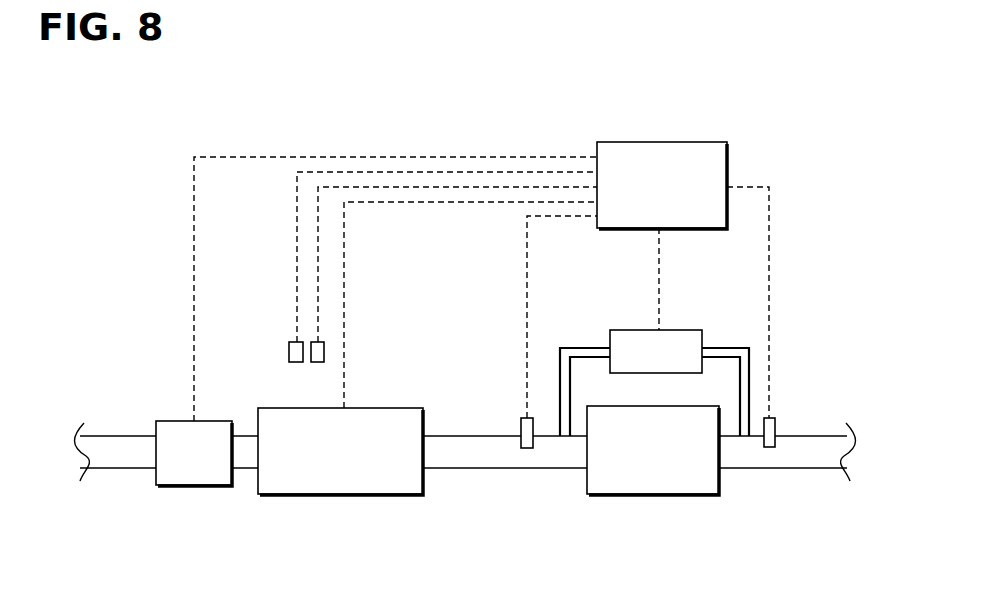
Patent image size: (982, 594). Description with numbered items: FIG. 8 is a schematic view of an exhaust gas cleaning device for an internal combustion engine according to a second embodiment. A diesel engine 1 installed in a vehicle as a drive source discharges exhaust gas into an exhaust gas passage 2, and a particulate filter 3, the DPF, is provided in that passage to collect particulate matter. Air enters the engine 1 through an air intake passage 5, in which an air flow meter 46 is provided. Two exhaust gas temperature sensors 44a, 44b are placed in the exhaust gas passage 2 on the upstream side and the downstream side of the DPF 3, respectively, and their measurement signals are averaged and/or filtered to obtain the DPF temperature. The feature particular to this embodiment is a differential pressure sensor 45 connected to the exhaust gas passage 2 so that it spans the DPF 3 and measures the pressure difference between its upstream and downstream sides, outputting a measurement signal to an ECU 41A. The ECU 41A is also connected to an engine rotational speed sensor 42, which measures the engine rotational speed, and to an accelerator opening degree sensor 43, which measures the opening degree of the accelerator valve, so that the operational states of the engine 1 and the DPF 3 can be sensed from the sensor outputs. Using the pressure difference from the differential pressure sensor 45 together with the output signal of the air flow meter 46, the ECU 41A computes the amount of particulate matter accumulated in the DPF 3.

The diesel engine 1 is at (338, 495).
The exhaust gas passage 2 is at (460, 469).
The particulate filter (DPF) 3 is at (652, 495).
The air intake passage 5 is at (110, 470).
The ECU 41A is at (665, 142).
The engine rotational speed sensor 42 is at (289, 352).
The accelerator opening degree sensor 43 is at (317, 362).
The exhaust gas temperature sensor 44a is at (527, 448).
The exhaust gas temperature sensor 44b is at (770, 447).
The differential pressure sensor 45 is at (636, 330).
The air flow meter 46 is at (192, 486).